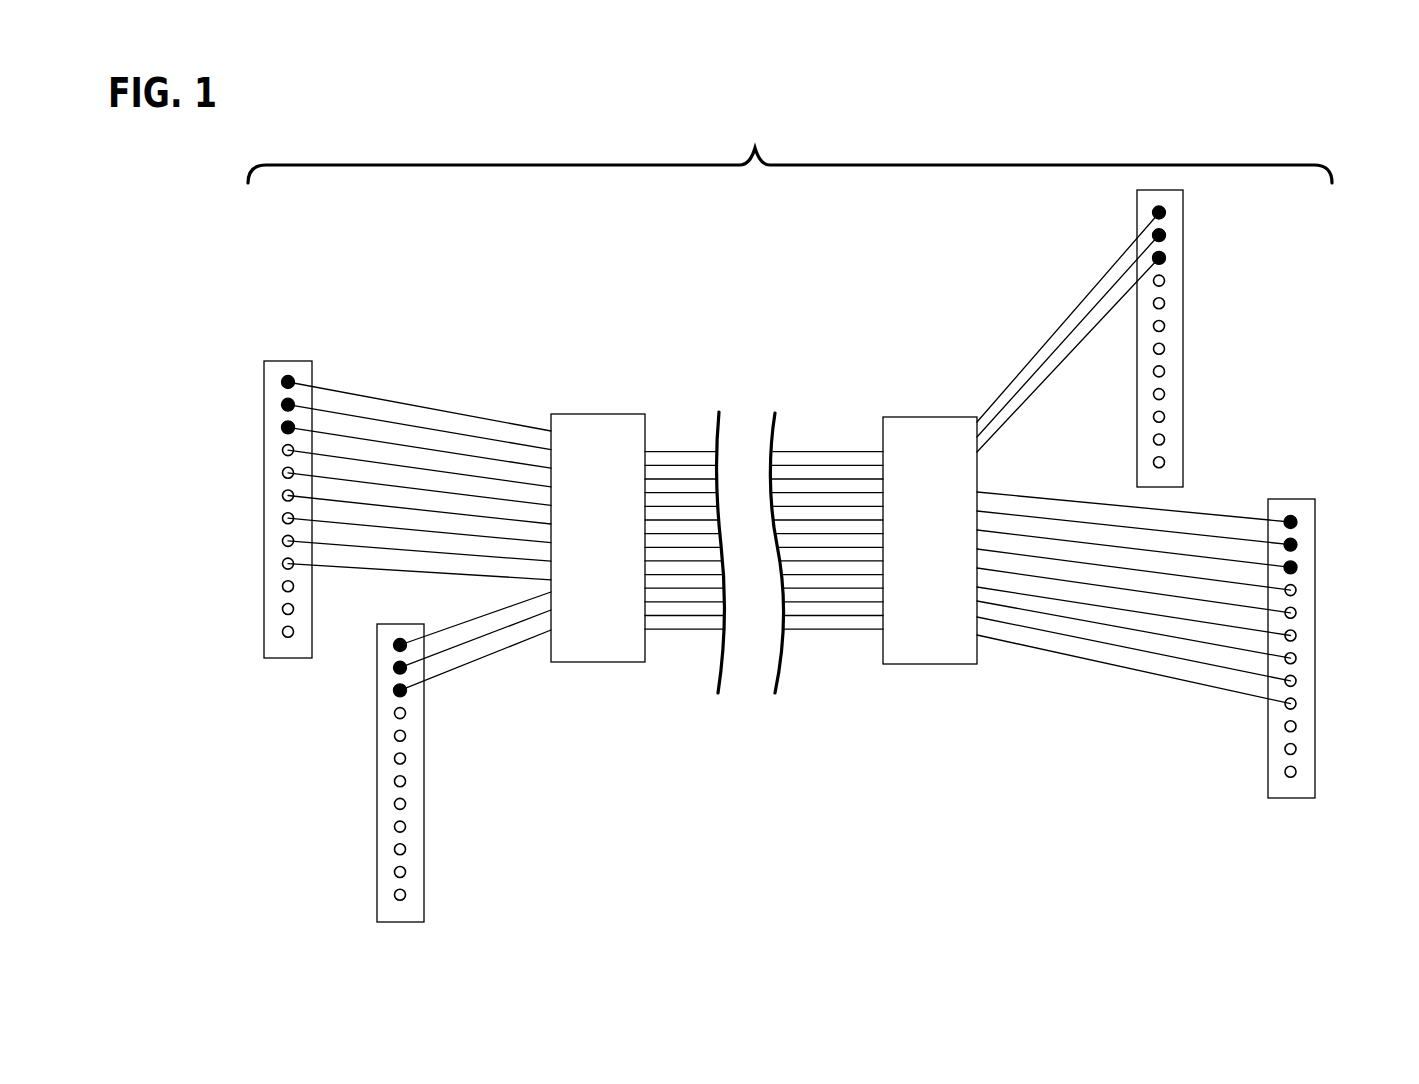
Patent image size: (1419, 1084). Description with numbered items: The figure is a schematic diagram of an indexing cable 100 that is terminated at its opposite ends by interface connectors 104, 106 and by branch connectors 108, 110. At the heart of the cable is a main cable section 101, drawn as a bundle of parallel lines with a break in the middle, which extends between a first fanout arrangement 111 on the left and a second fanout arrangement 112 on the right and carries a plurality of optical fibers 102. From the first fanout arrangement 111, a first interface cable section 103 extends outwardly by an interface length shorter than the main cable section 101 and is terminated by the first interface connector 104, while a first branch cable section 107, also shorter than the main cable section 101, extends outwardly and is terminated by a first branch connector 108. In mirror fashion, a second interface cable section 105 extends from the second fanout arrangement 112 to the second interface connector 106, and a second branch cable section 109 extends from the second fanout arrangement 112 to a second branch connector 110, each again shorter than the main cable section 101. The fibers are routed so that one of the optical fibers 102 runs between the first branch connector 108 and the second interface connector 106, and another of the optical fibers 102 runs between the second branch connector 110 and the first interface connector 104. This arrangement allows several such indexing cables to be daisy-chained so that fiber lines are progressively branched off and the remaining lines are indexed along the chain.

The indexing cable 100 is at (790, 148).
The main cable section 101 is at (824, 636).
The optical fibers 102 is at (801, 451).
The first interface cable section 103 is at (431, 400).
The first interface connector 104 is at (263, 427).
The second interface cable section 105 is at (1131, 674).
The second interface connector 106 is at (1315, 531).
The first branch cable section 107 is at (484, 679).
The first branch connector 108 is at (377, 845).
The second branch cable section 109 is at (1050, 333).
The second branch connector 110 is at (1184, 232).
The first fanout arrangement 111 is at (597, 413).
The second fanout arrangement 112 is at (928, 416).